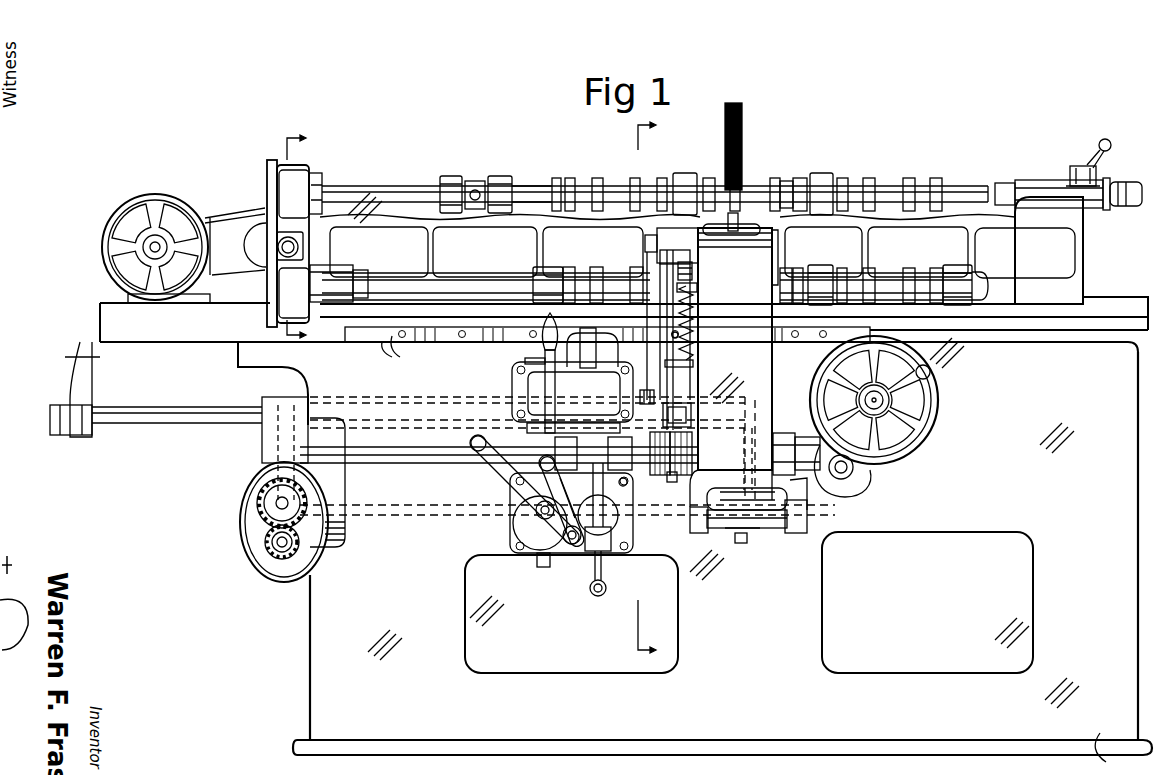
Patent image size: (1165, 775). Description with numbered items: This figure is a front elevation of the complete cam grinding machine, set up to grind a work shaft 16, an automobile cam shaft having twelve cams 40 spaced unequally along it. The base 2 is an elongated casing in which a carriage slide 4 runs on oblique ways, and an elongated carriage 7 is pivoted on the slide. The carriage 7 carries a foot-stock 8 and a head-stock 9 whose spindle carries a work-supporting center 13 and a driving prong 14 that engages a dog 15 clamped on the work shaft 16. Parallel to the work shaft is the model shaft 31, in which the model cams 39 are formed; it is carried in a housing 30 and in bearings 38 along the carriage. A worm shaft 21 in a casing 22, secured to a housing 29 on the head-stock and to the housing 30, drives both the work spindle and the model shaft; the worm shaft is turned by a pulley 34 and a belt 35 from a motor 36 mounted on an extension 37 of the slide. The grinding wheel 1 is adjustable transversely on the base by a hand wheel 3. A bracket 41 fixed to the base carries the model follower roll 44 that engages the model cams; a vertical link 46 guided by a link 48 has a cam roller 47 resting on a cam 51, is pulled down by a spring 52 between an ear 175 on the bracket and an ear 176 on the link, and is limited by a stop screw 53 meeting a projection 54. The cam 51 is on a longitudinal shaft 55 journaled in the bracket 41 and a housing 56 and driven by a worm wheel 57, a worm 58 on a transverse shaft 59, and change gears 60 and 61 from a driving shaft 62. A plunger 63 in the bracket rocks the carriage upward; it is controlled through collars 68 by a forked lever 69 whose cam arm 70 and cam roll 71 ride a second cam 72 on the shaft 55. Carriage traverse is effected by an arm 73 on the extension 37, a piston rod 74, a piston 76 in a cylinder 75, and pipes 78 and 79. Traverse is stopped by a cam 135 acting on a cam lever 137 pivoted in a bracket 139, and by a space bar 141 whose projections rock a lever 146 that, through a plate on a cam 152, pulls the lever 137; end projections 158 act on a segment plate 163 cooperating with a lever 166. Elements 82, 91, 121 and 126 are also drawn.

The grinding wheel 1 is at (742, 130).
The base 2 is at (722, 446).
The hand wheel 3 is at (940, 423).
The carriage slide 4 is at (1112, 308).
The carriage 7 is at (1080, 252).
The foot-stock 8 is at (1030, 186).
The head-stock 9 is at (370, 185).
The work-supporting center 13 is at (296, 238).
The driving arm or prong 14 is at (453, 177).
The dog 15 is at (503, 177).
The work shaft 16 is at (545, 188).
The worm shaft 21 is at (302, 243).
The frame or casing 22 is at (302, 254).
The housing 29 is at (312, 172).
The housing 30 is at (288, 293).
The model shaft 31 is at (455, 286).
The pulley 34 is at (262, 222).
The belt 35 is at (227, 216).
The motor 36 is at (103, 238).
The extension 37 is at (187, 335).
The bearings 38 is at (985, 272).
The model cams 39 is at (908, 268).
The cams 40 is at (936, 177).
The bracket 41 is at (775, 364).
The model follower roll 44 is at (790, 180).
The vertically disposed link 46 is at (664, 368).
The cam roller 47 is at (690, 415).
The link 48 is at (655, 418).
The cam 51 is at (672, 480).
The spring 52 is at (694, 358).
The stop screw 53 is at (693, 270).
The projection 54 is at (730, 208).
The shaft 55 is at (415, 464).
The housing 56 is at (346, 490).
The worm wheel 57 is at (278, 440).
The worm 58 is at (258, 503).
The transverse shaft 59 is at (263, 515).
The change gear 60 is at (266, 535).
The change gear 61 is at (273, 546).
The driving shaft 62 is at (276, 556).
The plunger 63 is at (742, 545).
The collars 68 is at (727, 536).
The forked lever 69 is at (697, 543).
The cam arm 70 is at (782, 532).
The cam roll 71 is at (812, 496).
The cam 72 is at (787, 433).
The arm 73 is at (68, 357).
The piston rod 74 is at (160, 425).
The cylinder 75 is at (290, 385).
The piston 76 is at (505, 396).
The pipe 78 is at (410, 512).
The pipe 79 is at (652, 516).
The lever block 82 is at (522, 520).
The rod 91 is at (594, 577).
The lever 121 is at (570, 505).
The lever 126 is at (505, 470).
The cam 135 is at (666, 478).
The cam lever 137 is at (606, 486).
The bracket 139 is at (528, 395).
The space bar 141 is at (404, 342).
The lever 146 is at (600, 362).
The cam 152 is at (540, 489).
The projection 158 is at (392, 356).
The segment plate 163 is at (538, 352).
The lever 166 is at (535, 379).
The ear 175 is at (700, 286).
The ear 176 is at (697, 364).